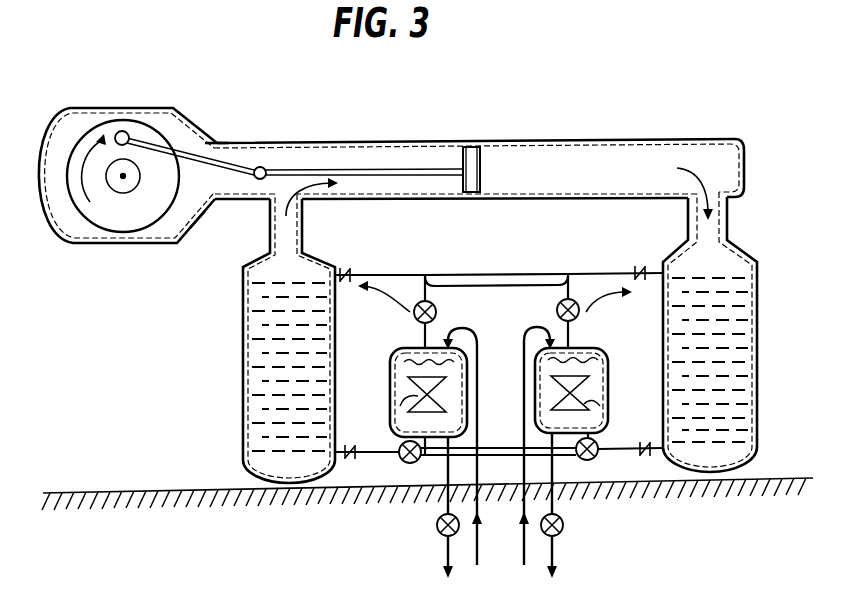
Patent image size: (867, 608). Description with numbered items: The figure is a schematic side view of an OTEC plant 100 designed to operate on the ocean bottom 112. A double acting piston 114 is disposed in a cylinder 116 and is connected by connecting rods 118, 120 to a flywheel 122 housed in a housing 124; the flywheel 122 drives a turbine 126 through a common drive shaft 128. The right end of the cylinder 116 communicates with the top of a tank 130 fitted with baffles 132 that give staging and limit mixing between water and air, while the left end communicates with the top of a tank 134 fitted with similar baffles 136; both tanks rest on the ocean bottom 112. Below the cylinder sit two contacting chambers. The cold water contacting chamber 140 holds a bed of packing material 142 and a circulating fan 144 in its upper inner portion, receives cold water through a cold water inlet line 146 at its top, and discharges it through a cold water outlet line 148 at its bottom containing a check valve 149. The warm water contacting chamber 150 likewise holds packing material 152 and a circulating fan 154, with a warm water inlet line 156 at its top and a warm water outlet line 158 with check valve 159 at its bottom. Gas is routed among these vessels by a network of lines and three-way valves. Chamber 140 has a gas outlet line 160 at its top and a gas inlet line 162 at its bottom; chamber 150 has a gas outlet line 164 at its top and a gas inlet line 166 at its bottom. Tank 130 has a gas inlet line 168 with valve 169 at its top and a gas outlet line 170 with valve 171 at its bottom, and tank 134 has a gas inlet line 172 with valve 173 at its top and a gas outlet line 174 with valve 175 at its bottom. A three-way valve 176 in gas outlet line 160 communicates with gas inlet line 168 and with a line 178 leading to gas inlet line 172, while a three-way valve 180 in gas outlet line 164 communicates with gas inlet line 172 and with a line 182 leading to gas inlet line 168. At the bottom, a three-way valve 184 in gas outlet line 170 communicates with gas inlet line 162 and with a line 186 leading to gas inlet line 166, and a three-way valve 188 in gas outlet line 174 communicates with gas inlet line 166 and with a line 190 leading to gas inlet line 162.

The OTEC plant 100 is at (662, 122).
The ocean bottom 112 is at (94, 484).
The double acting piston 114 is at (471, 160).
The cylinder 116 is at (373, 142).
The connecting rod 118 is at (307, 170).
The connecting rod 120 is at (217, 143).
The flywheel 122 is at (182, 200).
The housing 124 is at (80, 108).
The turbine 126 is at (114, 188).
The common drive shaft 128 is at (126, 175).
The tank 130 is at (757, 305).
The baffles 132 is at (738, 376).
The tank 134 is at (248, 310).
The baffles 136 is at (270, 366).
The cold water contacting chamber 140 is at (608, 385).
The packing material 142 is at (600, 408).
The circulating fan 144 is at (600, 360).
The cold water inlet line 146 is at (522, 512).
The cold water outlet line 148 is at (553, 505).
The check valve 149 is at (561, 530).
The warm water contacting chamber 150 is at (390, 393).
The packing material 152 is at (395, 420).
The circulating fan 154 is at (395, 367).
The warm water inlet line 156 is at (479, 372).
The warm water outlet line 158 is at (447, 505).
The check valve 159 is at (438, 530).
The gas outlet line 160 is at (572, 335).
The gas inlet line 162 is at (592, 437).
The gas outlet line 164 is at (420, 337).
The gas inlet line 166 is at (403, 446).
The gas inlet line 168 is at (600, 262).
The valve 169 is at (640, 267).
The gas outlet line 170 is at (620, 455).
The valve 171 is at (646, 442).
The gas inlet line 172 is at (385, 275).
The valve 173 is at (345, 268).
The gas outlet line 174 is at (392, 455).
The valve 175 is at (352, 457).
The three-way valve 176 is at (558, 312).
The line 178 is at (490, 275).
The three-way valve 180 is at (414, 316).
The line 182 is at (455, 287).
The three-way valve 184 is at (590, 458).
The line 186 is at (492, 447).
The three-way valve 188 is at (418, 460).
The line 190 is at (496, 456).